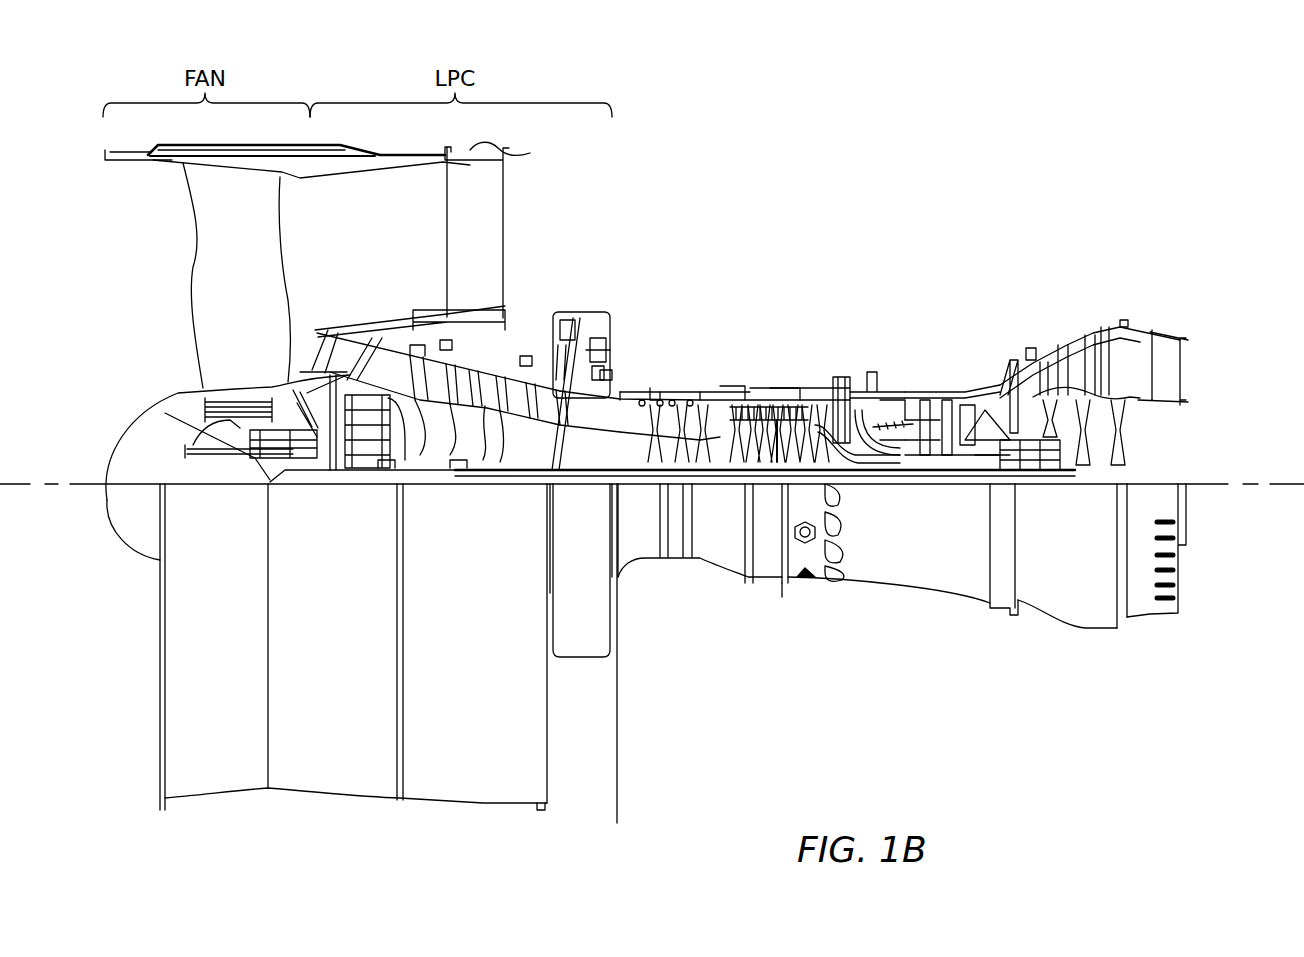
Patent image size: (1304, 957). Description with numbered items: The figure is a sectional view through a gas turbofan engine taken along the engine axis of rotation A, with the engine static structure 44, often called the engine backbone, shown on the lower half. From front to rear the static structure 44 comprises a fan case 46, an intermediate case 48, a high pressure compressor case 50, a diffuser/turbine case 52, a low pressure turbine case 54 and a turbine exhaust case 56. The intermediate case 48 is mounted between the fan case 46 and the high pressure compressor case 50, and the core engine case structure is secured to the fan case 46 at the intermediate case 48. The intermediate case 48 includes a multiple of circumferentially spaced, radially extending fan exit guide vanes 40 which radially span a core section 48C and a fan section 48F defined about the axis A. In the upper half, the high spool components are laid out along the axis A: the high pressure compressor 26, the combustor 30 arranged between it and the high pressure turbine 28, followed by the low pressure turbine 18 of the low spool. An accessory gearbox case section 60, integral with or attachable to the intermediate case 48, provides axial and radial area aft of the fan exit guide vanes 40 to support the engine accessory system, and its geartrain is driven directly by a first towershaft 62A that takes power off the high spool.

The engine axis of rotation A is at (1273, 478).
The low pressure turbine 18 is at (1182, 117).
The high pressure compressor 26 is at (815, 117).
The high pressure turbine 28 is at (1007, 117).
The combustor 30 is at (815, 117).
The fan exit guide vanes 40 is at (493, 228).
The engine static structure 44 is at (735, 710).
The fan case 46 is at (162, 823).
The intermediate case 48 is at (548, 823).
The core section 48C is at (428, 332).
The fan section 48F is at (530, 153).
The high pressure compressor case 50 is at (780, 595).
The diffuser/turbine case 52 is at (782, 597).
The low pressure turbine case 54 is at (1012, 627).
The turbine exhaust case 56 is at (1178, 637).
The accessory gearbox case section 60 is at (615, 363).
The first towershaft 62A is at (582, 306).